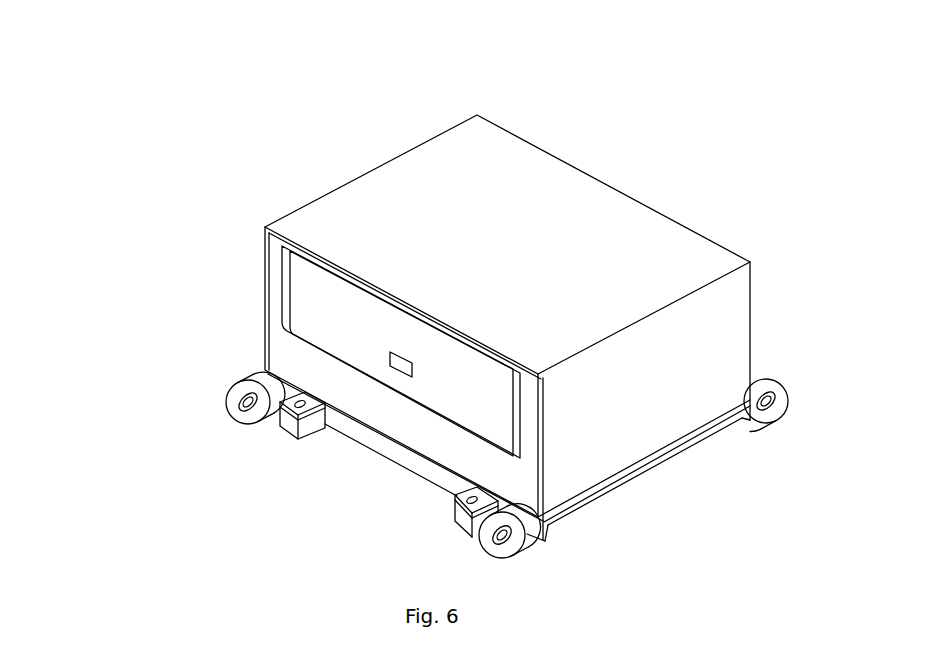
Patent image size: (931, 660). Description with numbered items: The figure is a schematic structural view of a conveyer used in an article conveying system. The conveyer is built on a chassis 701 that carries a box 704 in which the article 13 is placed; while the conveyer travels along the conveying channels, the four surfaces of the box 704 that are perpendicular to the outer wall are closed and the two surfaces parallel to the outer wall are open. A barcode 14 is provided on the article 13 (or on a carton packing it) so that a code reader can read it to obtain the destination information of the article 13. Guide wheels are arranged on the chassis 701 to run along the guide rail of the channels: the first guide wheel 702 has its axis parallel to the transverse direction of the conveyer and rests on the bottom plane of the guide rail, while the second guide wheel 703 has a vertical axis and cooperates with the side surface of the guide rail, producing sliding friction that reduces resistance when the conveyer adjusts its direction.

The article 13 is at (399, 257).
The barcode 14 is at (477, 216).
The chassis 701 is at (446, 382).
The first guide wheel 702 is at (177, 377).
The second guide wheel 703 is at (206, 441).
The box 704 is at (497, 327).